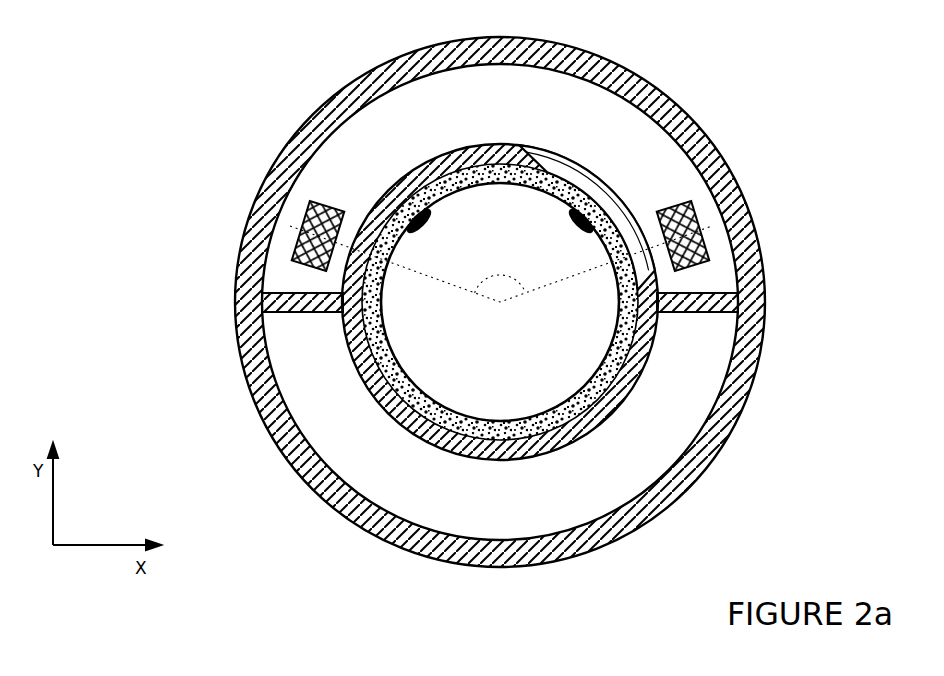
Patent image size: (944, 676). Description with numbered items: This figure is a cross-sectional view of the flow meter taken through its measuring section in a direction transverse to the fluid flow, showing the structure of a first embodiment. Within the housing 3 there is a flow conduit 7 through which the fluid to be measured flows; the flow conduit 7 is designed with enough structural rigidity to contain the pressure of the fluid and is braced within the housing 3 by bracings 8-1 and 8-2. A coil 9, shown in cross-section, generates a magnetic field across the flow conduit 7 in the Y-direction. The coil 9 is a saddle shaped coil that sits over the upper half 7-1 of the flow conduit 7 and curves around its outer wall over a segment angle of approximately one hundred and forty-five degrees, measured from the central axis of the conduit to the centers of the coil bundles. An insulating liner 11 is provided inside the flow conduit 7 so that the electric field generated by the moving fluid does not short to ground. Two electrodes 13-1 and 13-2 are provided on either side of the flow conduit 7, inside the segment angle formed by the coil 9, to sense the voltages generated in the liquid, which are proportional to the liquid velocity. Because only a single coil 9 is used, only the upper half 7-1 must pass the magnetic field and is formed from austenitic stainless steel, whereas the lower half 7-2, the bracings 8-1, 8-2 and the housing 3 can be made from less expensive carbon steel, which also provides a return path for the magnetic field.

The housing 3 is at (695, 113).
The flow conduit 7 is at (500, 305).
The upper half of the flow conduit 7-1 is at (567, 153).
The lower half of the flow conduit 7-2 is at (560, 447).
The bracing 8-1 is at (292, 313).
The bracing 8-2 is at (697, 312).
The coil 9 is at (333, 206).
The insulating liner 11 is at (487, 421).
The electrode 13-1 is at (424, 226).
The electrode 13-2 is at (575, 226).